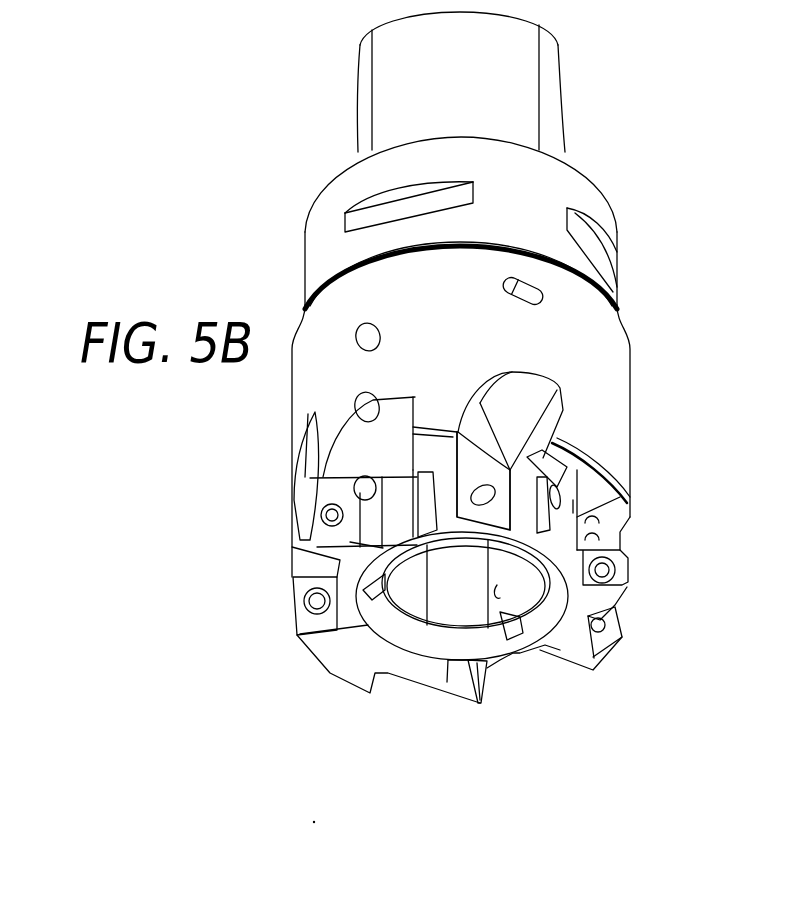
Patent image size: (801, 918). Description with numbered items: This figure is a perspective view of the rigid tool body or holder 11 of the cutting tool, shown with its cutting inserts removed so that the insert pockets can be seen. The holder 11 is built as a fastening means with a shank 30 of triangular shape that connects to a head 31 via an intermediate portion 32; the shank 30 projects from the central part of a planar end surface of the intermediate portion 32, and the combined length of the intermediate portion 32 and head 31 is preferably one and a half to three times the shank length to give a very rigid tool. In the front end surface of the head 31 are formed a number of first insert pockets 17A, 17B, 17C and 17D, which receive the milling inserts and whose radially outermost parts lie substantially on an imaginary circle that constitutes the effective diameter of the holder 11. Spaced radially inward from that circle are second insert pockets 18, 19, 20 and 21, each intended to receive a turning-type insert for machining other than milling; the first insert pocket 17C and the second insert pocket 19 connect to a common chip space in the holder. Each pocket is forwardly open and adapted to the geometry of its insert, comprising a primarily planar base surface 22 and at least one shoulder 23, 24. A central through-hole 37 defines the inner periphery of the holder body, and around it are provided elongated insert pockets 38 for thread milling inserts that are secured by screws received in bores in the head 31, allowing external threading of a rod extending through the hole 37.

The tool body or holder 11 is at (652, 306).
The first insert pocket 17A is at (627, 619).
The first insert pocket 17B is at (388, 689).
The first insert pocket 17C is at (303, 519).
The first insert pocket 17D is at (447, 428).
The second insert pocket 18 is at (493, 685).
The second insert pocket 19 is at (288, 604).
The second insert pocket 20 is at (424, 510).
The second insert pocket 21 is at (630, 561).
The base surface 22 is at (610, 648).
The shoulder 23 is at (560, 443).
The shoulder 24 is at (533, 500).
The shank 30 is at (514, 101).
The head 31 is at (612, 384).
The intermediate portion 32 is at (594, 207).
The central through-hole 37 is at (445, 609).
The insert pocket 38 is at (500, 638).